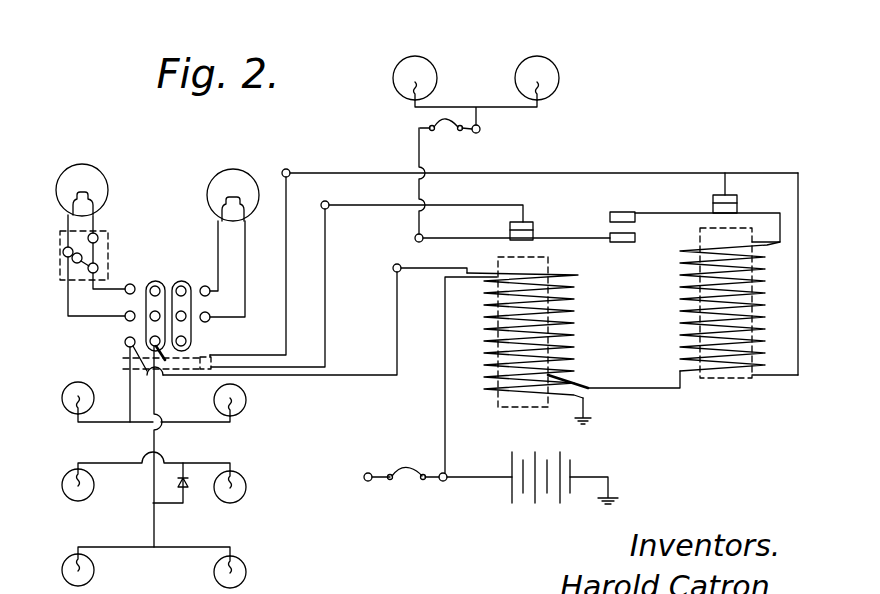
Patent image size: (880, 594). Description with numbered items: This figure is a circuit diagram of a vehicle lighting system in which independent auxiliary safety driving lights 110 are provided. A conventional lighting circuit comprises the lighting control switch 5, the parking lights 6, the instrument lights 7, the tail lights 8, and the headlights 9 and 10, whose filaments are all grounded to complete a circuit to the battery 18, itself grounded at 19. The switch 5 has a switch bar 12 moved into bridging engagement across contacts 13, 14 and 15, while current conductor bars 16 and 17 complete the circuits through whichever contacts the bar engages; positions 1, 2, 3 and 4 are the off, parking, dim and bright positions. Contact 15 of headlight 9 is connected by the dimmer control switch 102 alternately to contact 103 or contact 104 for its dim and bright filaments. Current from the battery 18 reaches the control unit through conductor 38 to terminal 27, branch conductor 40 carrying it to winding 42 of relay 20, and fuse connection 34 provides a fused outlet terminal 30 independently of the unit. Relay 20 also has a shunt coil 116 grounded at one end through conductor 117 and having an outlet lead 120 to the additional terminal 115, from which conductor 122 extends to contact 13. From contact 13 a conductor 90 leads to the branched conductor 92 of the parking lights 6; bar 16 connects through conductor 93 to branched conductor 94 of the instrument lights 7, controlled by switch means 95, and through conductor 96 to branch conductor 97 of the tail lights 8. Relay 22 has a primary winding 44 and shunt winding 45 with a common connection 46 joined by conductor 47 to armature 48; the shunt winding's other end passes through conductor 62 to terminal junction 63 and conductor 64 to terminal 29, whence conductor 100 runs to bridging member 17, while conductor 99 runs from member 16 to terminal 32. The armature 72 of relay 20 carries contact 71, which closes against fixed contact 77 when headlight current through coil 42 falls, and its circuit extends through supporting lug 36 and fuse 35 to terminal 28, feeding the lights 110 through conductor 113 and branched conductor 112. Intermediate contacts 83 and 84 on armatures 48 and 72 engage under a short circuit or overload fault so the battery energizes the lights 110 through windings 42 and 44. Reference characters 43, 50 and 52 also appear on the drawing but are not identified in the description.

The off position 1 is at (132, 446).
The parking position 2 is at (125, 342).
The dim position 3 is at (125, 316).
The bright position 4 is at (120, 293).
The lighting control switch 5 is at (75, 331).
The parking lights 6 is at (73, 388).
The instrument lights 7 is at (62, 484).
The tail lights 8 is at (62, 570).
The headlight 9 is at (88, 172).
The headlight 10 is at (216, 175).
The switch bar 12 is at (212, 357).
The contact 13 is at (126, 346).
The contact 14 is at (210, 317).
The contact 15 is at (131, 284).
The current conductor bar 16 is at (156, 281).
The current conductor bar 17 is at (182, 281).
The battery 18 is at (500, 528).
The ground 19 is at (590, 478).
The relay 20 is at (503, 407).
The relay 22 is at (725, 380).
The terminal 27 is at (440, 482).
The terminal 28 is at (480, 132).
The terminal 29 is at (288, 170).
The fused outlet terminal 30 is at (366, 482).
The terminal 32 is at (326, 202).
The fuse connection 34 is at (411, 466).
The fuse 35 is at (446, 132).
The supporting lug 36 is at (415, 239).
The conductor 38 is at (485, 478).
The branch conductor 40 is at (444, 390).
The winding 42 is at (490, 310).
The armature 43 is at (630, 388).
The primary winding 44 is at (690, 315).
The shunt winding 45 is at (703, 292).
The common connection 46 is at (766, 248).
The conductor 47 is at (781, 225).
The armature 48 is at (637, 238).
The contact 50 is at (737, 207).
The contact 52 is at (712, 199).
The conductor 62 is at (783, 376).
The terminal junction 63 is at (725, 192).
The conductor 64 is at (640, 173).
The contact 71 is at (535, 228).
The armature 72 is at (583, 241).
The fixed contact 77 is at (523, 222).
The intermediate contact 83 is at (610, 214).
The intermediate contact 84 is at (636, 242).
The conductor 90 is at (127, 390).
The branched conductor 92 is at (88, 425).
The conductor 93 is at (165, 438).
The branched conductor 94 is at (133, 458).
The switch means 95 is at (187, 483).
The conductor 96 is at (152, 515).
The branch conductor 97 is at (143, 548).
The conductor 99 is at (326, 257).
The conductor 100 is at (285, 275).
The dimmer control switch 102 is at (82, 256).
The contact 103 is at (63, 250).
The contact 104 is at (97, 235).
The auxiliary safety driving lights 110 is at (418, 63).
The branched conductor 112 is at (466, 107).
The conductor 113 is at (480, 119).
The additional terminal 115 is at (394, 270).
The shunt coil 116 is at (560, 308).
The conductor 117 is at (578, 412).
The outlet lead 120 is at (468, 268).
The conductor 122 is at (396, 313).